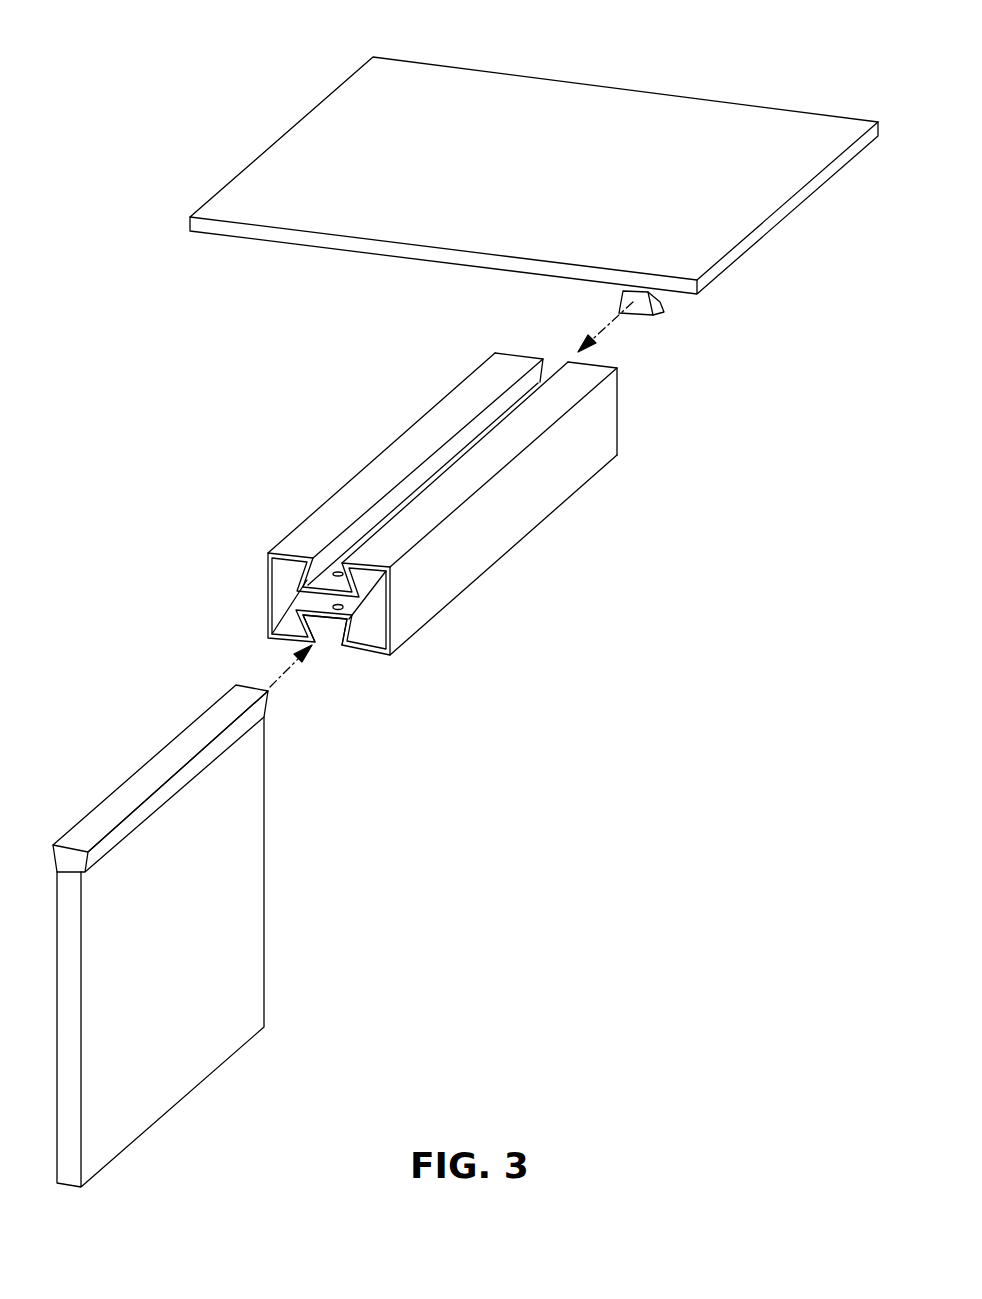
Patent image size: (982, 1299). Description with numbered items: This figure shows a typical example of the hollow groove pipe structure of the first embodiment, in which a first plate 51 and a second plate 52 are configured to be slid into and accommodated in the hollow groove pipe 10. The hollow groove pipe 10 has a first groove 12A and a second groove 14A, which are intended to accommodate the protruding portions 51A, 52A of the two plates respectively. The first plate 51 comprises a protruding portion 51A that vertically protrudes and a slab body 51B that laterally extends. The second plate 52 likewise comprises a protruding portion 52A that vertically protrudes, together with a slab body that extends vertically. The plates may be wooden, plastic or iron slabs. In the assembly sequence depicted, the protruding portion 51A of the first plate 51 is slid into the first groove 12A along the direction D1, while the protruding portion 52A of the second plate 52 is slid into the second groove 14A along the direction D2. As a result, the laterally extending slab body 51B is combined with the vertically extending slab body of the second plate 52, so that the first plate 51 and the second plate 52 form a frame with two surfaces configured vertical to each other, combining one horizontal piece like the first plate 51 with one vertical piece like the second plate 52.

The hollow groove pipe 10 is at (437, 530).
The first groove 12A is at (473, 436).
The second groove 14A is at (332, 637).
The first plate 51 is at (529, 189).
The protruding portion 51A is at (656, 302).
The slab body 51B is at (508, 88).
The second plate 52 is at (206, 913).
The protruding portion 52A is at (205, 755).
The direction D1 is at (611, 327).
The direction D2 is at (300, 671).